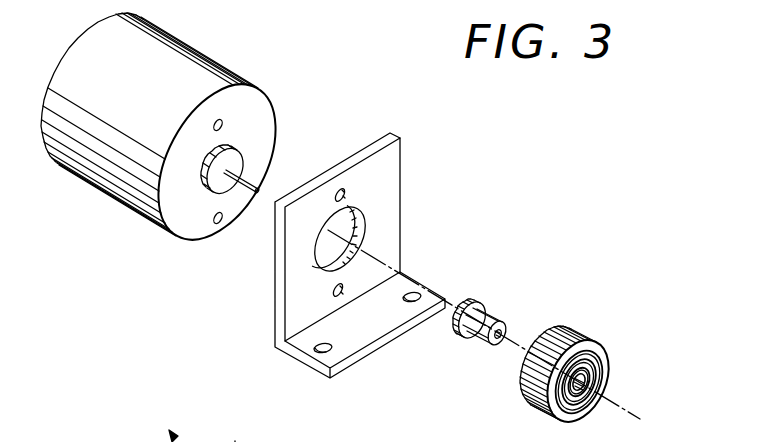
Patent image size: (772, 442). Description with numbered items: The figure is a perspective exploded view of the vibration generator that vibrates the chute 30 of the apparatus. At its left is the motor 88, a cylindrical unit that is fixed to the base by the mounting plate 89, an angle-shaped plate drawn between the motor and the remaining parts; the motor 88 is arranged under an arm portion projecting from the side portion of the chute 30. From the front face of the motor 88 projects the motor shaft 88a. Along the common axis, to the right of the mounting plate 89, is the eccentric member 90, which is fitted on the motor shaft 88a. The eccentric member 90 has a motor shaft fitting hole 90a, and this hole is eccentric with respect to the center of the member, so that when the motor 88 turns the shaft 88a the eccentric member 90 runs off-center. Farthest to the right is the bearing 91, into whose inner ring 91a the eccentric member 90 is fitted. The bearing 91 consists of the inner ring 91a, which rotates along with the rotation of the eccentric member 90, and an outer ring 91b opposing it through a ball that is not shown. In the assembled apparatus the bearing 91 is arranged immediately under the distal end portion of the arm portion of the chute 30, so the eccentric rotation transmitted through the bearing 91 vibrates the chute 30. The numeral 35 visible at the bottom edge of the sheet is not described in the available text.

The motor 88 is at (193, 78).
The motor shaft 88a is at (250, 185).
The mounting plate 89 is at (388, 192).
The eccentric member 90 is at (497, 315).
The motor shaft fitting hole 90a is at (498, 341).
The bearing 91 is at (567, 345).
The inner ring 91a is at (590, 367).
The outer ring 91b is at (545, 343).
The chute 30 is at (181, 423).
The support 35 is at (236, 434).